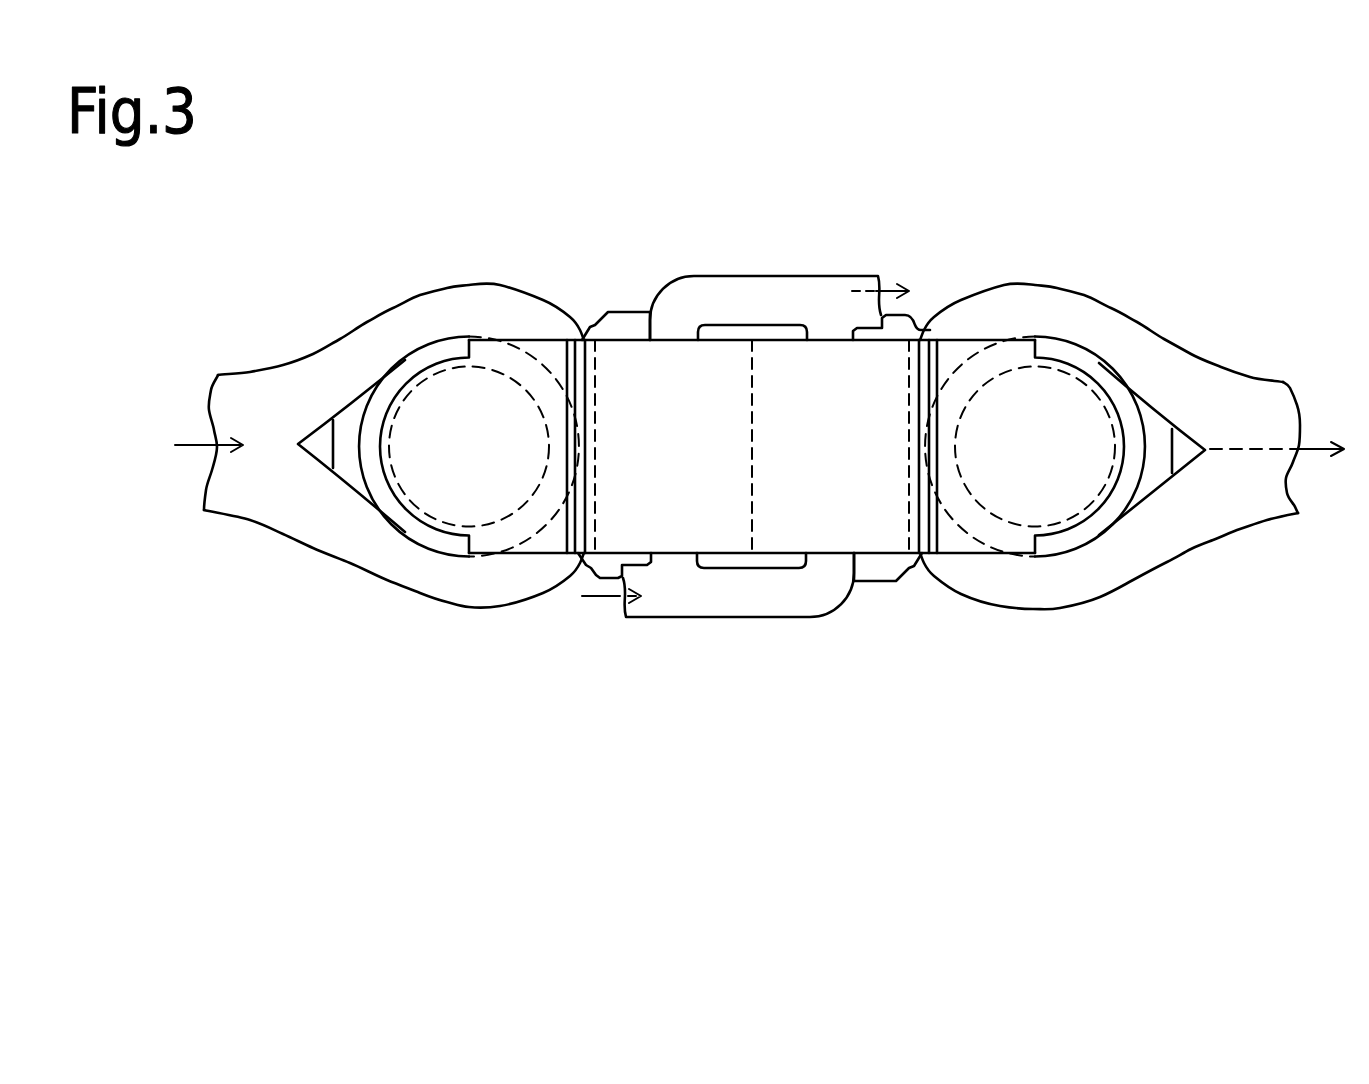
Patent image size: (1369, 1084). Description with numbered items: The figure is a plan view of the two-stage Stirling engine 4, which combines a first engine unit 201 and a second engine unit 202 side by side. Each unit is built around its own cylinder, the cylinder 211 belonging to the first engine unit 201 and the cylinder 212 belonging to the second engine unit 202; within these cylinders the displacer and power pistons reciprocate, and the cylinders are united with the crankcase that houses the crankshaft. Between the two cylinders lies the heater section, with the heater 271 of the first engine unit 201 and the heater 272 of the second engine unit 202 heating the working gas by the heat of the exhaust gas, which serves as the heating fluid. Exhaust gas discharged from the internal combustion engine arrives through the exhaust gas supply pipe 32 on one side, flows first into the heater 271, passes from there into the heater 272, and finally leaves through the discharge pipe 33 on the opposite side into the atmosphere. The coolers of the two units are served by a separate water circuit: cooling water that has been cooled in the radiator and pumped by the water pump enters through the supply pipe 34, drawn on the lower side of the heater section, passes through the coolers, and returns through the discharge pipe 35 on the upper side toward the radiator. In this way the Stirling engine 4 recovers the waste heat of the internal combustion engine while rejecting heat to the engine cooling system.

The Stirling engine 4 is at (731, 766).
The first engine unit 201 is at (608, 265).
The second engine unit 202 is at (954, 268).
The cylinder 211 is at (430, 530).
The cylinder 212 is at (1080, 527).
The heater 271 is at (648, 485).
The heater 272 is at (865, 492).
The exhaust gas supply pipe 32 is at (282, 503).
The discharge pipe 33 is at (1212, 508).
The supply pipe 34 is at (725, 598).
The discharge pipe 35 is at (785, 293).